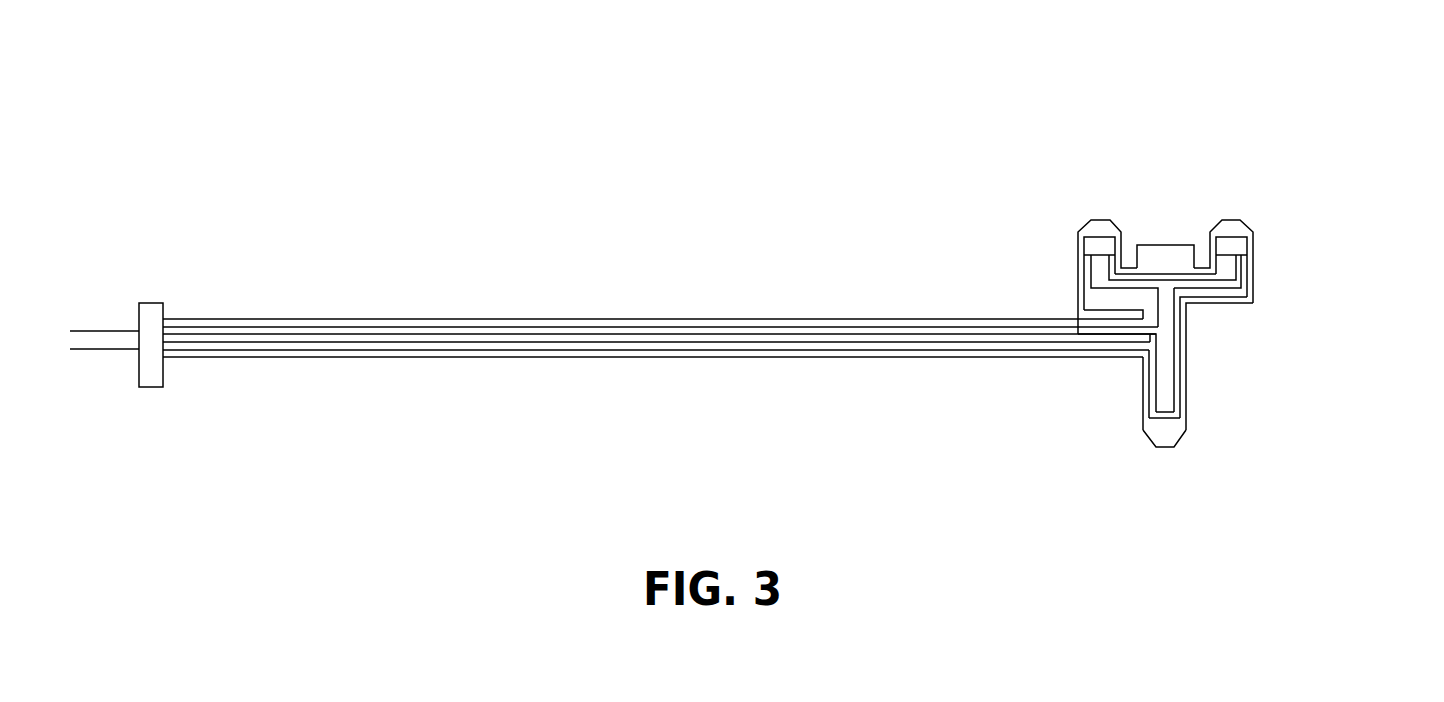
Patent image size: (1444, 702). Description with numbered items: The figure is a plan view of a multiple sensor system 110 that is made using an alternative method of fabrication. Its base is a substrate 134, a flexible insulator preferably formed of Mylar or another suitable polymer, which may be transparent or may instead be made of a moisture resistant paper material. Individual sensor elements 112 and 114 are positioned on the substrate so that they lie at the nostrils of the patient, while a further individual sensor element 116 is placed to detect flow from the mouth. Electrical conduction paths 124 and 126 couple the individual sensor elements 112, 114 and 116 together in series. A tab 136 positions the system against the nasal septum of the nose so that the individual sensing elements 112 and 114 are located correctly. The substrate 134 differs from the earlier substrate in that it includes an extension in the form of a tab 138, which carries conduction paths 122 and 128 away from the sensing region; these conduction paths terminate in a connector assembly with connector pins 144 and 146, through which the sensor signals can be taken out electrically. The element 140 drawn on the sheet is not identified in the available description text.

The multiple sensor system 110 is at (1296, 86).
The individual sensor element 112 is at (1252, 252).
The individual sensor element 114 is at (1124, 267).
The individual sensor element 116 is at (1203, 441).
The conduction path 122 is at (660, 314).
The electrical conduction path 124 is at (1193, 226).
The electrical conduction path 126 is at (1253, 306).
The conduction path 128 is at (656, 366).
The substrate 134 is at (1180, 370).
The tab 136 is at (1135, 223).
The tab 138 is at (653, 346).
The connector 140 is at (187, 329).
The connector pin 144 is at (103, 316).
The connector pin 146 is at (100, 372).